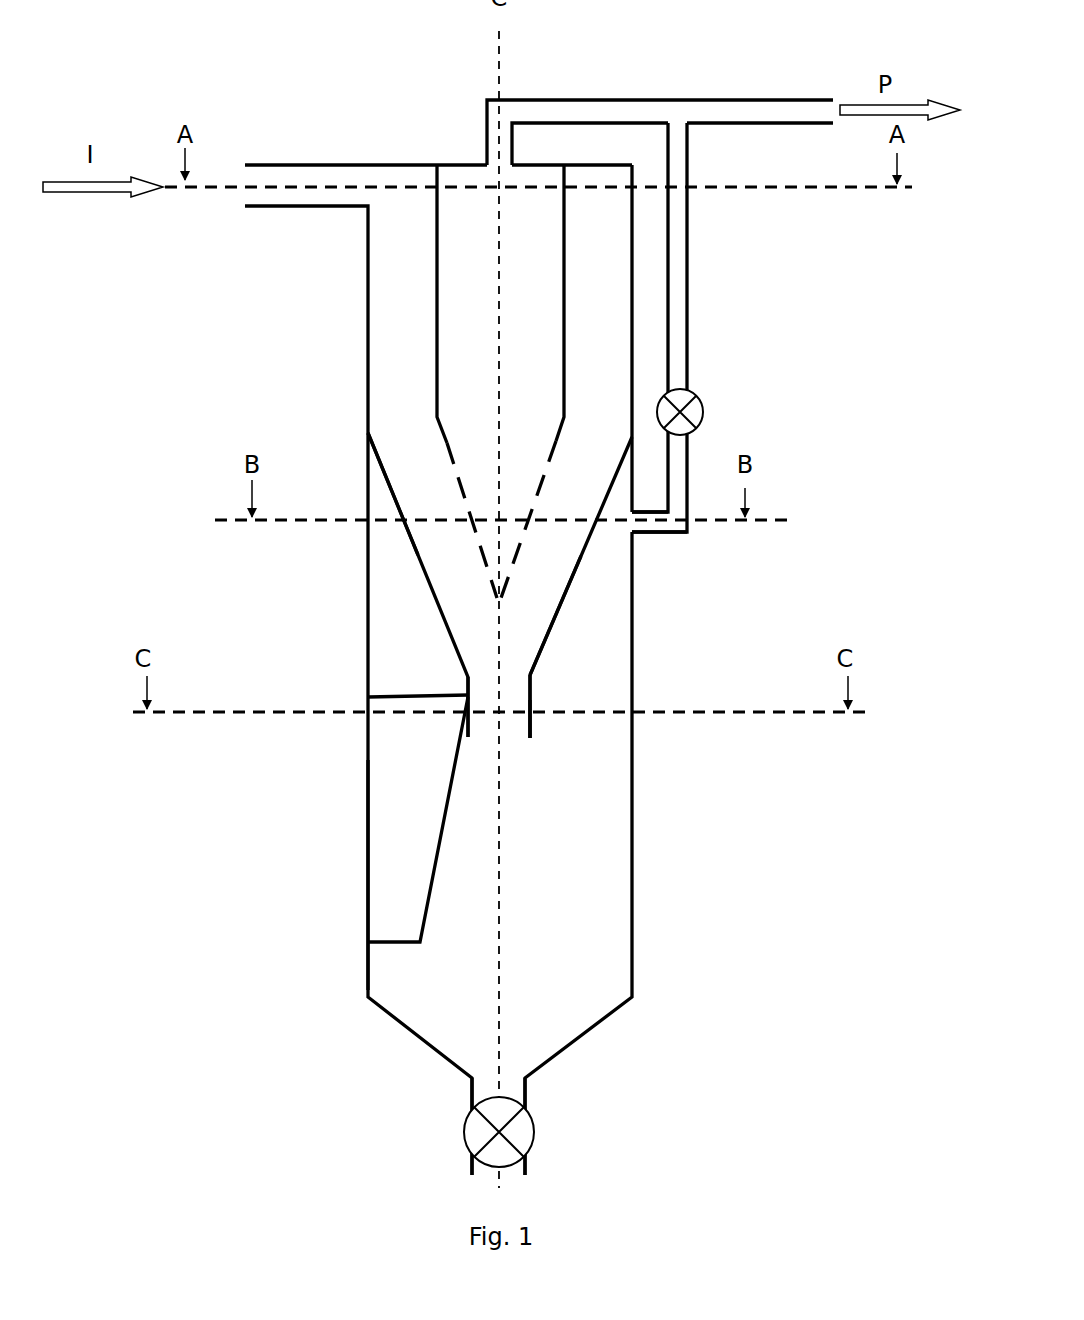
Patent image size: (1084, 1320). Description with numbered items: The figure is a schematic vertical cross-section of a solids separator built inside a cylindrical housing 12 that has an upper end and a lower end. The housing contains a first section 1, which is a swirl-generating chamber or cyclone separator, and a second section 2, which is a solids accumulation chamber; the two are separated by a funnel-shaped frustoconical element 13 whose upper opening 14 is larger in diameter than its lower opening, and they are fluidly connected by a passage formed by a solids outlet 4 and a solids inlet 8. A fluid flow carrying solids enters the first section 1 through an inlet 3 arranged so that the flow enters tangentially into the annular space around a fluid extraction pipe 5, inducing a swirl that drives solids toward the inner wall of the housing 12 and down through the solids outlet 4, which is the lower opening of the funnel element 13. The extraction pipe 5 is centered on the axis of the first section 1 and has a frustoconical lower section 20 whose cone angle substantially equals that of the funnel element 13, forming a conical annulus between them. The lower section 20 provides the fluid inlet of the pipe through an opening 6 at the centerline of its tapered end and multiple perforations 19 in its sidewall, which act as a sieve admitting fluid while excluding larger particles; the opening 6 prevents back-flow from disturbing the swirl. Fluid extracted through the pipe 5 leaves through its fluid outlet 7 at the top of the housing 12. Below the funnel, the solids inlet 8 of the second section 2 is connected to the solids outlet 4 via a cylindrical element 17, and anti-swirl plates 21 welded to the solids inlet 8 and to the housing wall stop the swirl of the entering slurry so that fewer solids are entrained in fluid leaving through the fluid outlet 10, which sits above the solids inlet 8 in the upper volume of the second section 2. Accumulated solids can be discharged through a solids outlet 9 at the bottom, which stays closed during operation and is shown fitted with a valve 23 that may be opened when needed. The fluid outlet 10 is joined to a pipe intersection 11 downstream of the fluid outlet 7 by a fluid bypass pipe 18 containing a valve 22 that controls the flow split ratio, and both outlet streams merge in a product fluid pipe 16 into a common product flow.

The first section 1 is at (400, 322).
The second section 2 is at (470, 822).
The inlet 3 is at (348, 186).
The solids outlet 4 is at (499, 679).
The fluid extraction pipe 5 is at (436, 290).
The opening 6 is at (500, 597).
The fluid outlet 7 is at (497, 163).
The solids inlet 8 is at (499, 737).
The solids outlet 9 is at (497, 1173).
The fluid outlet 10 is at (633, 520).
The pipe intersection 11 is at (670, 117).
The cylindrical housing 12 is at (368, 680).
The funnel-shaped frustoconical element 13 is at (410, 540).
The upper opening 14 is at (402, 433).
The product fluid pipe 16 is at (798, 125).
The cylindrical element 17 is at (530, 710).
The fluid bypass pipe 18 is at (688, 350).
The perforations 19 is at (525, 542).
The lower section 20 is at (482, 560).
The anti-swirl plates 21 is at (400, 878).
The valve 22 is at (703, 410).
The bottom valve 23 is at (533, 1132).